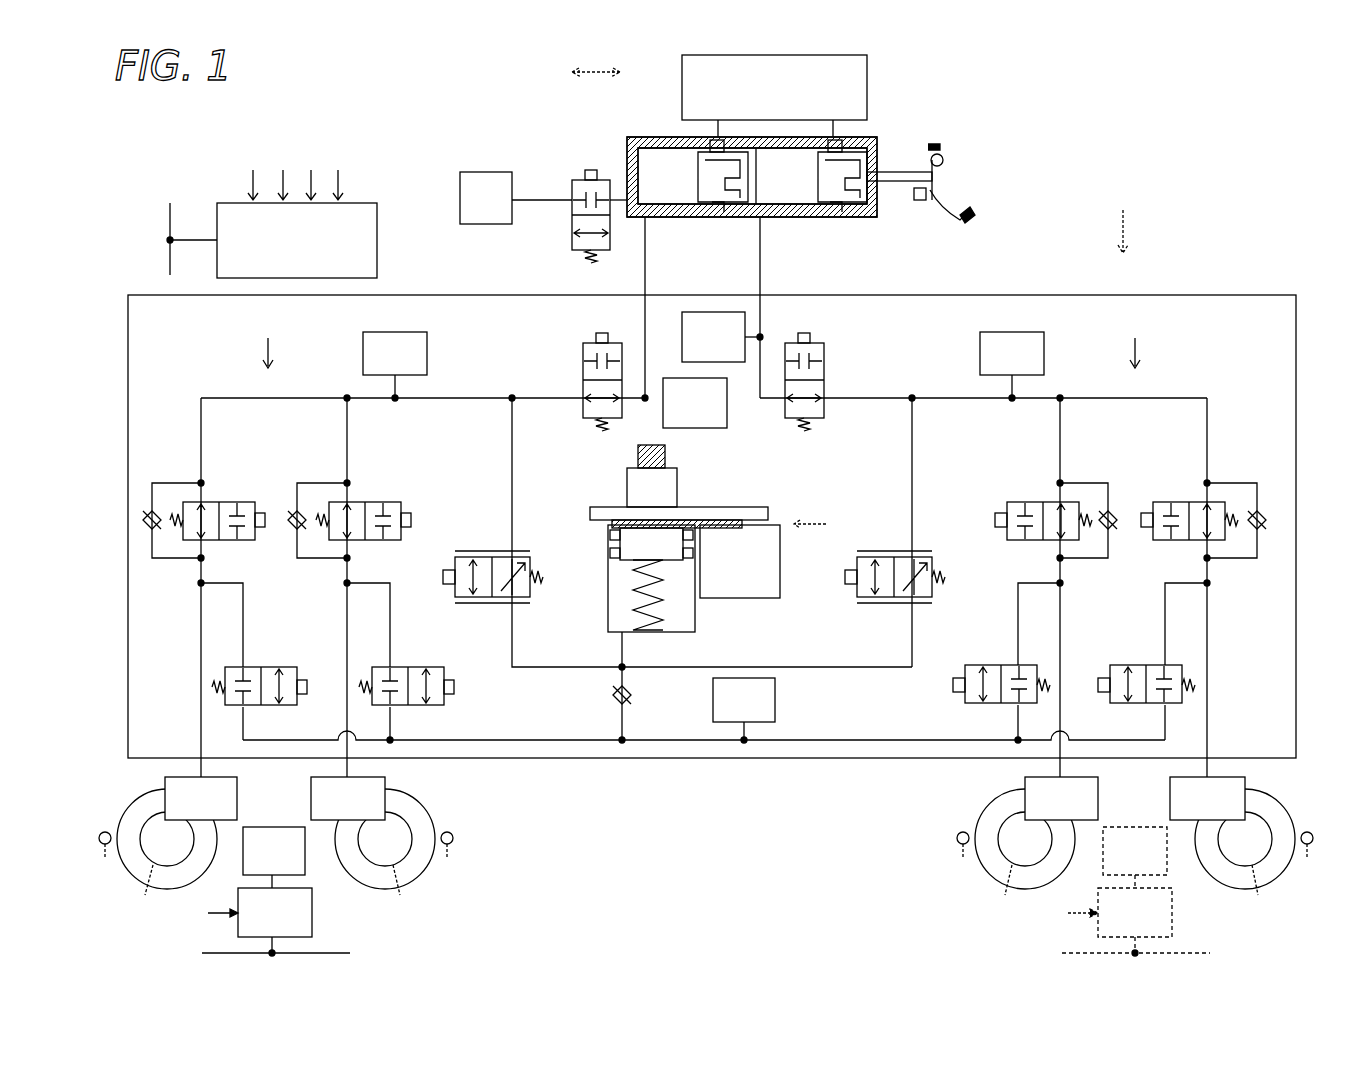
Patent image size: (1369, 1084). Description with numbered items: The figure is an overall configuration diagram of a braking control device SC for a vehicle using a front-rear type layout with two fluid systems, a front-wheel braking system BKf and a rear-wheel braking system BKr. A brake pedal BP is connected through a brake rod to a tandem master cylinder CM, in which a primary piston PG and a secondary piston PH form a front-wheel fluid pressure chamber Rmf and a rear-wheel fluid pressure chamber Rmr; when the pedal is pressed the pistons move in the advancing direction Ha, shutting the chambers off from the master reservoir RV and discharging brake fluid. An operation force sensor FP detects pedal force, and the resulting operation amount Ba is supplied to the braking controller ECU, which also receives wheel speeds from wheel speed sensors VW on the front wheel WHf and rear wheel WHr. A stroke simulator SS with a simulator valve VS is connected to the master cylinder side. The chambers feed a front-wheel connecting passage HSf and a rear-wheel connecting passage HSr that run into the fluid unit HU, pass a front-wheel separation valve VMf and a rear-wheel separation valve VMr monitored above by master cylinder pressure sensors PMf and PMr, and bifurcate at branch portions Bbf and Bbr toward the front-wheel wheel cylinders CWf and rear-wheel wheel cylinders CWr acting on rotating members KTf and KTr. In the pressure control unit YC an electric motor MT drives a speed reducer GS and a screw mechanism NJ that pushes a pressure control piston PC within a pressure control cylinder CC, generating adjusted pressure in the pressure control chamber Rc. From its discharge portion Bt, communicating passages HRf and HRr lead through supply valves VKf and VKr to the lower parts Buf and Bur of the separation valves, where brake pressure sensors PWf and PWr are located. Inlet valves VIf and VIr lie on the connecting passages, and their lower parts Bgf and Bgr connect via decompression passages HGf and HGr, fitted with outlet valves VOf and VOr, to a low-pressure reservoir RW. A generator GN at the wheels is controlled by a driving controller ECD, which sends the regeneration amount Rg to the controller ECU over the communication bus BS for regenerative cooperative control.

The braking controller ECU is at (297, 240).
The operation amount Ba is at (285, 172).
The in-vehicle communication bus BS is at (671, 579).
The stroke simulator SS is at (516, 198).
The simulator valve VS is at (574, 186).
The master reservoir RV is at (774, 96).
The advancing direction Ha is at (596, 73).
The master cylinder CM is at (742, 165).
The front-wheel fluid pressure chamber Rmf is at (698, 176).
The rear-wheel fluid pressure chamber Rmr is at (816, 176).
The secondary piston PH is at (650, 240).
The primary piston PG is at (765, 240).
The braking operation member BP is at (948, 196).
The operation force sensor FP is at (920, 203).
The braking control device SC is at (1121, 218).
The fluid unit HU is at (476, 296).
The front-wheel braking system BKf is at (267, 339).
The rear-wheel braking system BKr is at (1133, 339).
The front-wheel connecting passage HSf is at (246, 388).
The rear-wheel connecting passage HSr is at (1142, 392).
The front-wheel branch portion Bbf is at (344, 388).
The rear-wheel branch portion Bbr is at (1060, 392).
The lower part of front-wheel separation valve Buf is at (509, 388).
The lower part of rear-wheel separation valve Bur is at (910, 388).
The front-wheel brake fluid pressure sensor PWf is at (395, 366).
The rear-wheel brake fluid pressure sensor PWr is at (1012, 366).
The front-wheel communicating passage HRf is at (516, 412).
The rear-wheel communicating passage HRr is at (908, 412).
The front-wheel inlet valve VIf is at (210, 502).
The rear-wheel inlet valve VIr is at (1044, 502).
The lower part of front-wheel inlet valve Bgf is at (198, 583).
The lower part of rear-wheel inlet valve Bgr is at (1062, 583).
The front-wheel outlet valve VOf is at (252, 668).
The rear-wheel outlet valve VOr is at (1002, 668).
The front-wheel supply valve VKf is at (504, 550).
The rear-wheel supply valve VKr is at (918, 552).
The front-wheel decompression passage HGf is at (474, 740).
The rear-wheel decompression passage HGr is at (804, 740).
The front-wheel separation valve VMf is at (584, 342).
The rear-wheel separation valve VMr is at (816, 342).
The front-wheel master cylinder fluid pressure sensor PMf is at (695, 403).
The rear-wheel master cylinder fluid pressure sensor PMr is at (722, 337).
The rotation/linear motion conversion mechanism NJ is at (668, 468).
The speed reducer GS is at (694, 506).
The pressure control unit YC is at (824, 523).
The pressure control cylinder CC is at (674, 587).
The pressure control piston PC is at (610, 560).
The pressure control chamber Rc is at (690, 626).
The electric motor MT is at (740, 561).
The discharge portion Bt is at (625, 636).
The low-pressure reservoir RW is at (744, 710).
The front wheel WHf is at (132, 800).
The rear wheel WHr is at (989, 800).
The front-wheel wheel cylinder CWf is at (275, 798).
The rear-wheel wheel cylinder CWr is at (1135, 798).
The wheel speed sensor VW is at (702, 866).
The front-wheel rotating member KTf is at (261, 899).
The rear-wheel rotating member KTr is at (1122, 899).
The electric motor/generator GN is at (705, 857).
The driving controller ECD is at (705, 912).
The regeneration amount Rg is at (639, 915).